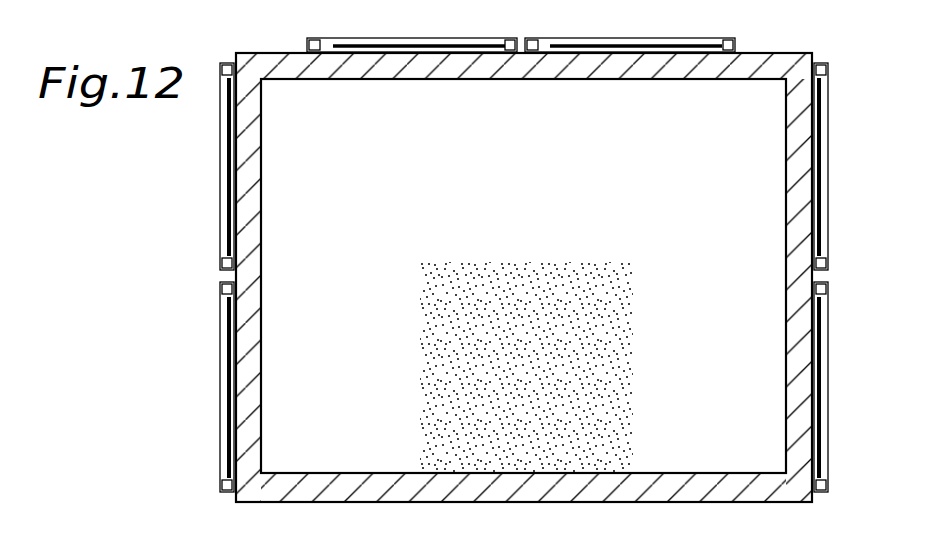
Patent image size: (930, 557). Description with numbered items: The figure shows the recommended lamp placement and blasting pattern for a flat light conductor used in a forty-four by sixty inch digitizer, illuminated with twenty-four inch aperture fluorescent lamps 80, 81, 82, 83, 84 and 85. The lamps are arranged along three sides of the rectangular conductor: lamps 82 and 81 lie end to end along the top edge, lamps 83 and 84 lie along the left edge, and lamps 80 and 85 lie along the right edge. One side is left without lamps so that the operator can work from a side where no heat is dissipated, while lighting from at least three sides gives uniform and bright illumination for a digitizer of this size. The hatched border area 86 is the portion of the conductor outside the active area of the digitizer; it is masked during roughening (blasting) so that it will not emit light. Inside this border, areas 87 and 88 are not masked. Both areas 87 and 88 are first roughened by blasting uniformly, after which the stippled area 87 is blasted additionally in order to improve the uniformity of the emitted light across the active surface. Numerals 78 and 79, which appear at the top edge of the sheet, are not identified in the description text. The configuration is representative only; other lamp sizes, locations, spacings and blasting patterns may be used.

The substrate strip 78 is at (378, 4).
The substrate strip 79 is at (678, 4).
The lamp 80 is at (827, 153).
The lamp 81 is at (595, 38).
The lamp 82 is at (427, 38).
The lamp 83 is at (220, 148).
The lamp 84 is at (222, 345).
The lamp 85 is at (827, 343).
The masked area 86 is at (717, 488).
The additionally blasted area 87 is at (460, 427).
The uniformly roughened area 88 is at (362, 220).